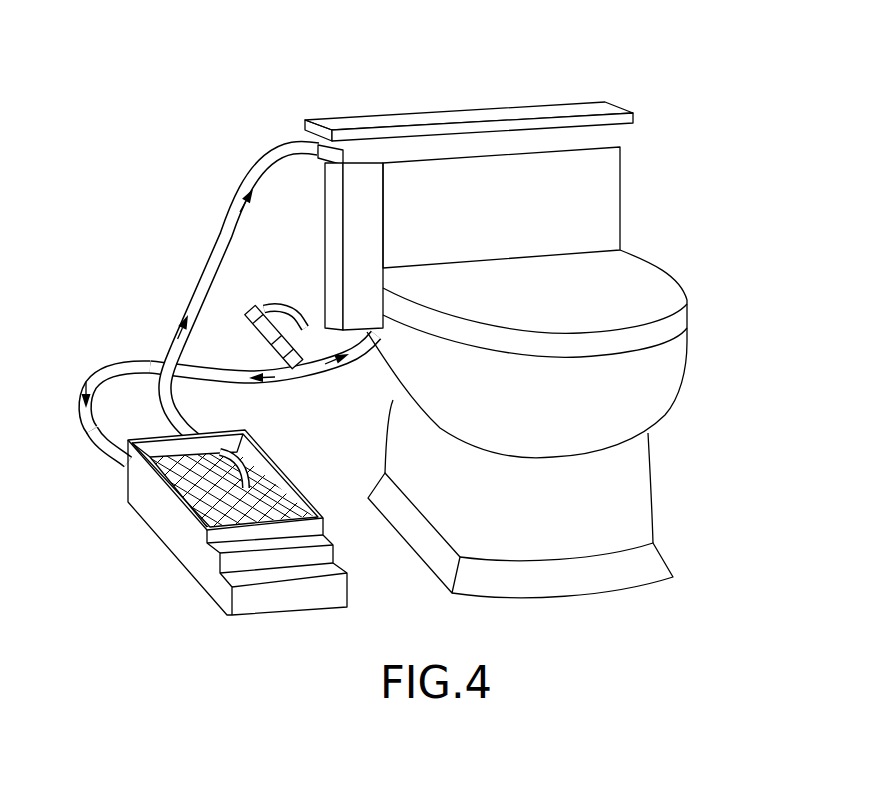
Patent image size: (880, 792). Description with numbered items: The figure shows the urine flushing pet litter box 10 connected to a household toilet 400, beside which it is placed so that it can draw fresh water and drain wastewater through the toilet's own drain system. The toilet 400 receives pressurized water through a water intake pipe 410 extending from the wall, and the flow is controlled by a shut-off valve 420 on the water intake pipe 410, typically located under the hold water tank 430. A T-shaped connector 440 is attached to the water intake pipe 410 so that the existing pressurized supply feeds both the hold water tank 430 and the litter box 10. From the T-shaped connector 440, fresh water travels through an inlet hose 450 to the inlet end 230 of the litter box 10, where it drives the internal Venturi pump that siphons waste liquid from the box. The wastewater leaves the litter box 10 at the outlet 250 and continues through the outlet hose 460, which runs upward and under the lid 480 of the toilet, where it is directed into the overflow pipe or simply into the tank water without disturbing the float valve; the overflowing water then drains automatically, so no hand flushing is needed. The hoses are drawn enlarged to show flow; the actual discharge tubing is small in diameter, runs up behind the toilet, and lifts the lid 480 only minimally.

The urine flushing pet litter box 10 is at (163, 538).
The inlet end 230 is at (123, 467).
The outlet 250 is at (200, 435).
The toilet 400 is at (687, 350).
The water intake pipe 410 is at (253, 313).
The shut-off valve 420 is at (300, 317).
The hold water tank 430 is at (620, 182).
The T-shaped connector 440 is at (303, 377).
The inlet hose 450 is at (142, 364).
The outlet hose 460 is at (238, 192).
The tank lid 480 is at (533, 107).